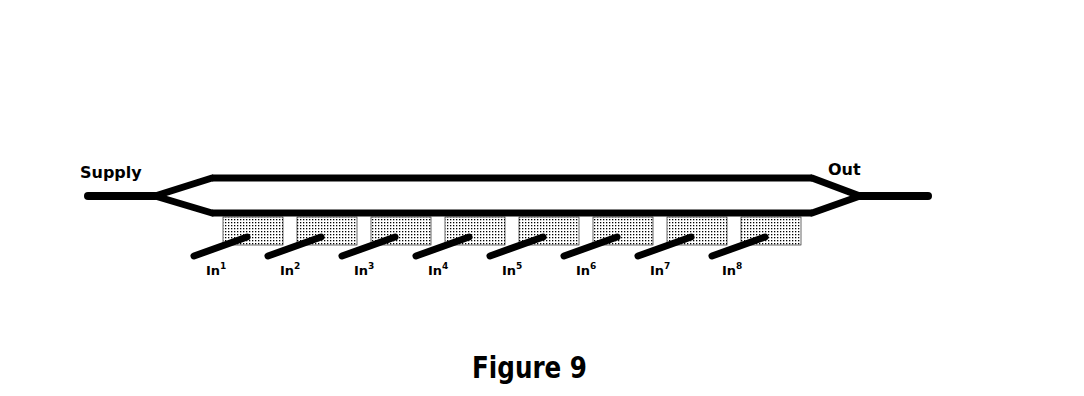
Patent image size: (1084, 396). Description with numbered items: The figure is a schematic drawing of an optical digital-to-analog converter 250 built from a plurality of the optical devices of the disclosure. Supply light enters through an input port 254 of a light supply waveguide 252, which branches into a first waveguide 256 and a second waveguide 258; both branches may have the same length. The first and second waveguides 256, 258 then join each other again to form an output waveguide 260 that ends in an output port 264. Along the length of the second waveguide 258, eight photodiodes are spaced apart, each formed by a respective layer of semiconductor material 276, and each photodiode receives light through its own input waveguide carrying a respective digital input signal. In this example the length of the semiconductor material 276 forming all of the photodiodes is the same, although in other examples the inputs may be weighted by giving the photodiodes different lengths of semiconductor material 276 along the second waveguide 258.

The digital-to-analog converter 250 is at (733, 90).
The light supply waveguide 252 is at (129, 201).
The input port 254 is at (86, 195).
The first waveguide 256 is at (312, 175).
The second waveguide 258 is at (833, 210).
The output waveguide 260 is at (882, 192).
The output port 264 is at (928, 199).
The semiconductor material 276 is at (223, 228).